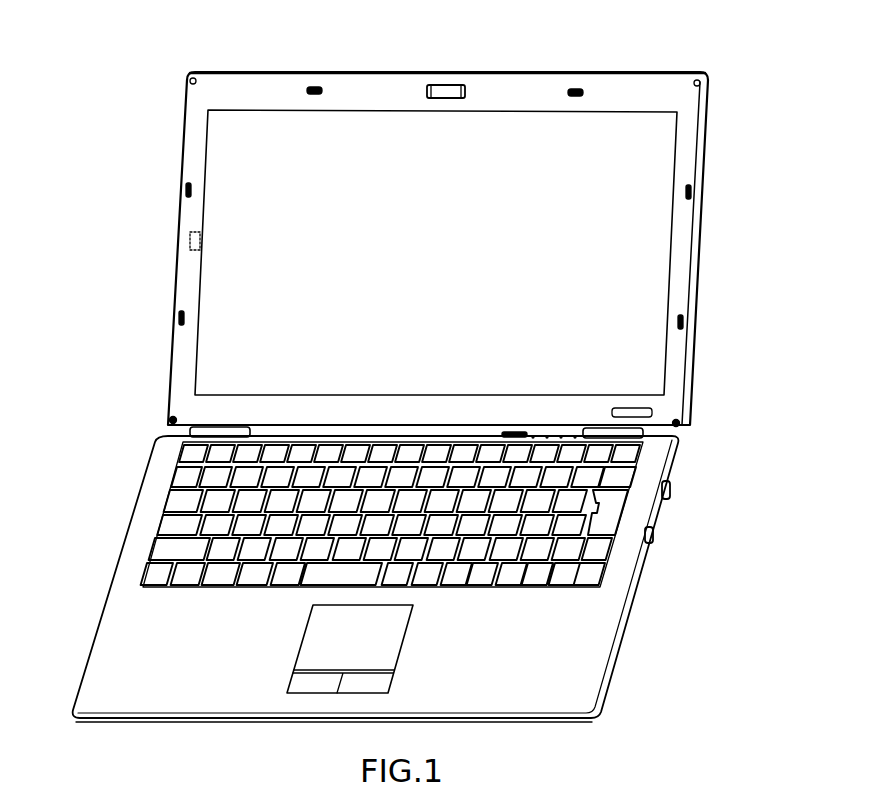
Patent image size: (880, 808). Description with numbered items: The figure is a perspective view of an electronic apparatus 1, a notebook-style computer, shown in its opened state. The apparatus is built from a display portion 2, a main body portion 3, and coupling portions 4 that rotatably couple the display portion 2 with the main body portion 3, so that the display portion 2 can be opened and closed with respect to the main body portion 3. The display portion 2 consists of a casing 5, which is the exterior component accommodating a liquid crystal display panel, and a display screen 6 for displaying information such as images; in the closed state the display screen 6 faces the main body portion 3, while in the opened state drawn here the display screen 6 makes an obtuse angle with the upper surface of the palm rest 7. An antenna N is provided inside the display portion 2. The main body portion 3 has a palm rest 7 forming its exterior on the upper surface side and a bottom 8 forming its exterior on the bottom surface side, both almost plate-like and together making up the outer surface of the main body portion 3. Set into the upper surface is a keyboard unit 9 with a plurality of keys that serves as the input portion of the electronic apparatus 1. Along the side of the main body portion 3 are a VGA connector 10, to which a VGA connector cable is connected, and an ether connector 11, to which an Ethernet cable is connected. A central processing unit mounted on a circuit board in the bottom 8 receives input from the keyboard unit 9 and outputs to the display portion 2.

The electronic apparatus 1 is at (435, 71).
The display portion 2 is at (696, 258).
The main body portion 3 is at (622, 626).
The coupling portions 4 is at (227, 432).
The casing 5 is at (193, 212).
The antenna N is at (190, 246).
The display screen 6 is at (213, 298).
The palm rest 7 is at (121, 622).
The bottom 8 is at (600, 693).
The keyboard unit 9 is at (178, 500).
The VGA connector 10 is at (673, 491).
The ether connector 11 is at (654, 536).